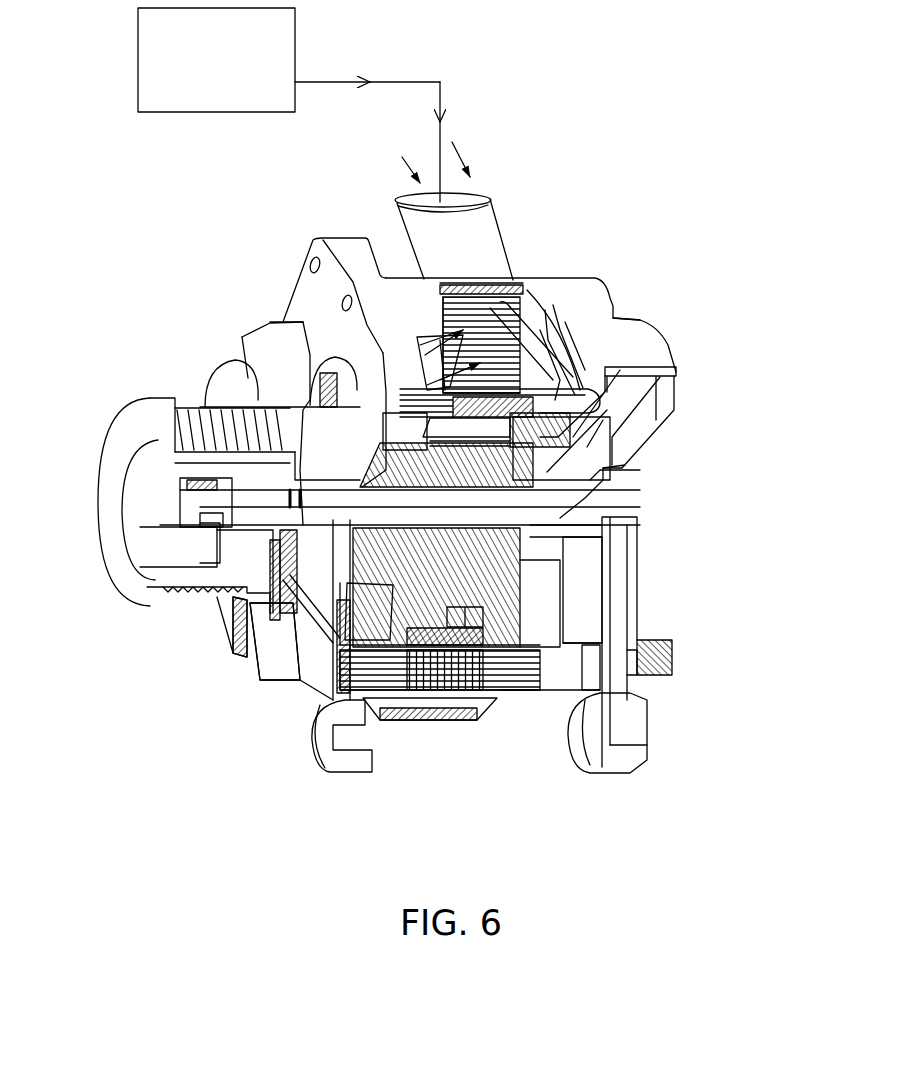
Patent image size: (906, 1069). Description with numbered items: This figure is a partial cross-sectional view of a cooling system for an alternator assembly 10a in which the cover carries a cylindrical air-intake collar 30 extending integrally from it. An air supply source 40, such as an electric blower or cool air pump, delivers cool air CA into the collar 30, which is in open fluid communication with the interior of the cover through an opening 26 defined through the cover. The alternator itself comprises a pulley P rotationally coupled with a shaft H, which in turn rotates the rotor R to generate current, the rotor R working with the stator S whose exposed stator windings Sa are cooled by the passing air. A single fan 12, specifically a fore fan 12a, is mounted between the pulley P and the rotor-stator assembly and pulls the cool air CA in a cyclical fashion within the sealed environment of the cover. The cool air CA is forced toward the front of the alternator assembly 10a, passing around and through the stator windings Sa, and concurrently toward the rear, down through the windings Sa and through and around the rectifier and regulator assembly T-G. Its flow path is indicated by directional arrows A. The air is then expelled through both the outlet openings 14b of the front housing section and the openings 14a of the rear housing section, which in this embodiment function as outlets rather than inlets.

The air supply source 40 is at (221, 106).
The cool air CA is at (400, 82).
The air-intake collar 30 is at (465, 238).
The alternator assembly 10a is at (548, 182).
The opening 26 is at (470, 285).
The stator S is at (513, 392).
The stator windings Sa is at (577, 363).
The openings of the rear section of housing 14a is at (678, 372).
The outlet openings of the front section of housing 14b is at (383, 417).
The rotor R is at (585, 573).
The pulley P is at (115, 443).
The shaft H is at (173, 507).
The fan 12 is at (227, 633).
The fore fan 12a is at (227, 633).
The rectifier and regulator assembly T-G is at (615, 435).
The directional arrow for cool-air pathway A is at (363, 397).